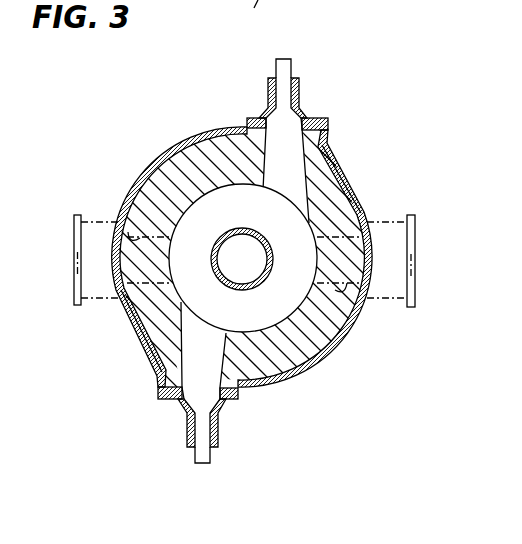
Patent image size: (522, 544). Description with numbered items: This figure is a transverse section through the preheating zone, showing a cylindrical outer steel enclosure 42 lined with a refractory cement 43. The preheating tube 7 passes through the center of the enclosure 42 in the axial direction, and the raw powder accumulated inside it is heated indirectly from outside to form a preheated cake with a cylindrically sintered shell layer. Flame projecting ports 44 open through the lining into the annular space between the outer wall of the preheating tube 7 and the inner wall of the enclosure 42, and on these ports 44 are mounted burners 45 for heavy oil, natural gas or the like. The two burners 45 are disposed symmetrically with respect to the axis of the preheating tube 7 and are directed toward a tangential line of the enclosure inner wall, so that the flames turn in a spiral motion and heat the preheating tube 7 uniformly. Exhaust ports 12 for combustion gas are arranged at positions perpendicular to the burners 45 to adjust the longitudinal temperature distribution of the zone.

The preheating tube 7 is at (262, 270).
The exhaust port 12 is at (128, 237).
The cylindrical outer steel enclosure 42 is at (177, 147).
The refractory cement 43 is at (333, 205).
The flame projecting port 44 is at (306, 180).
The burner 45 is at (292, 66).